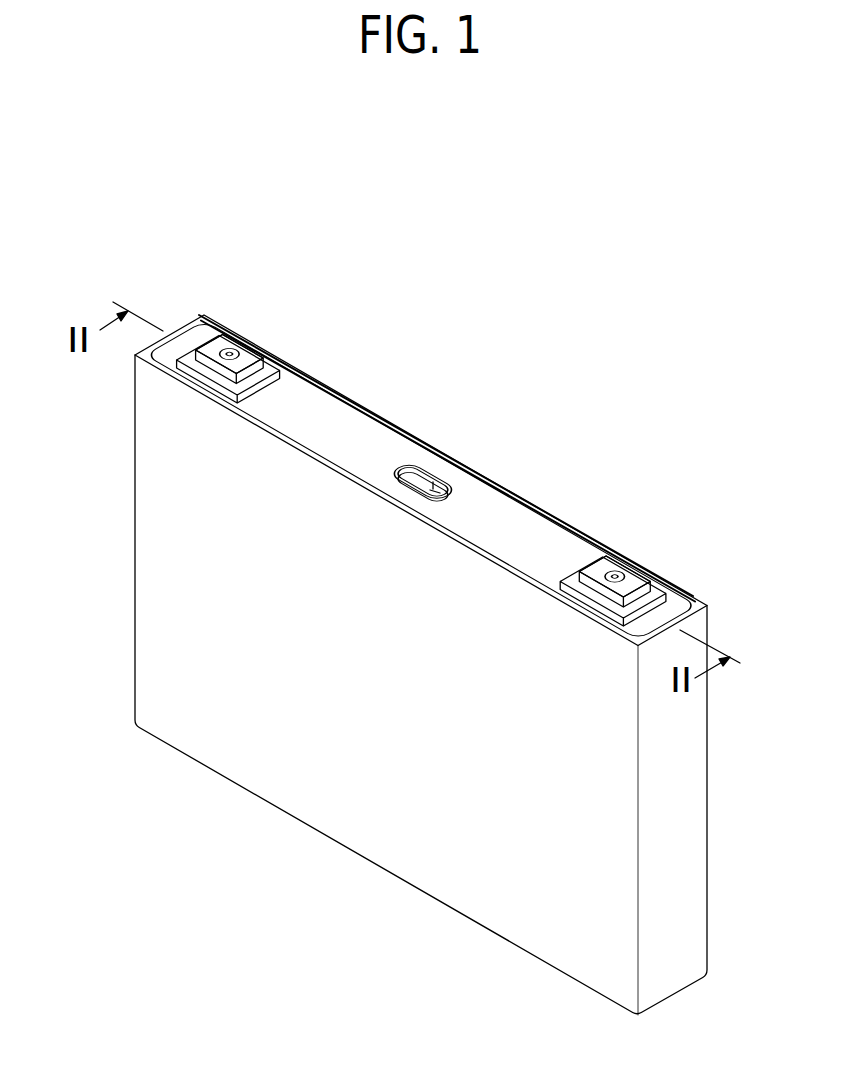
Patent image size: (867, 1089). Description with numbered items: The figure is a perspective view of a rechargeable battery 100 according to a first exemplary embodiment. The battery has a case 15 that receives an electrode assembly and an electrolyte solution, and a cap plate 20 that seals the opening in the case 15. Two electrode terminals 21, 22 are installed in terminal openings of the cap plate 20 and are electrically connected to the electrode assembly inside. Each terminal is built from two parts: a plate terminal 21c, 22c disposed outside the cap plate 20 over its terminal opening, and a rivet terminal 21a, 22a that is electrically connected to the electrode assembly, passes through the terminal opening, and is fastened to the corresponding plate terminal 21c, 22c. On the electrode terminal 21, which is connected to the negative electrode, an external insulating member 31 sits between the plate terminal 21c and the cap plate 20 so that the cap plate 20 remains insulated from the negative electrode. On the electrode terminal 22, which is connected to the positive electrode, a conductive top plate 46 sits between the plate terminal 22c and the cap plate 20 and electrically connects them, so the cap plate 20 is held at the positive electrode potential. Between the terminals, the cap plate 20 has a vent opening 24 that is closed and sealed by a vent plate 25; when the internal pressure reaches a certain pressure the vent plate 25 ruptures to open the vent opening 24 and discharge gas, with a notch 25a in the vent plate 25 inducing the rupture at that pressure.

The rechargeable battery 100 is at (502, 300).
The case 15 is at (343, 800).
The cap plate 20 is at (357, 424).
The electrode terminal 21 is at (245, 309).
The rivet terminal 21a is at (229, 350).
The plate terminal 21c is at (247, 352).
The electrode terminal 22 is at (656, 531).
The rivet terminal 22a is at (613, 572).
The plate terminal 22c is at (633, 578).
The vent opening 24 is at (462, 437).
The vent plate 25 is at (425, 481).
The notch 25a is at (433, 494).
The external insulating member 31 is at (265, 370).
The top plate 46 is at (660, 582).